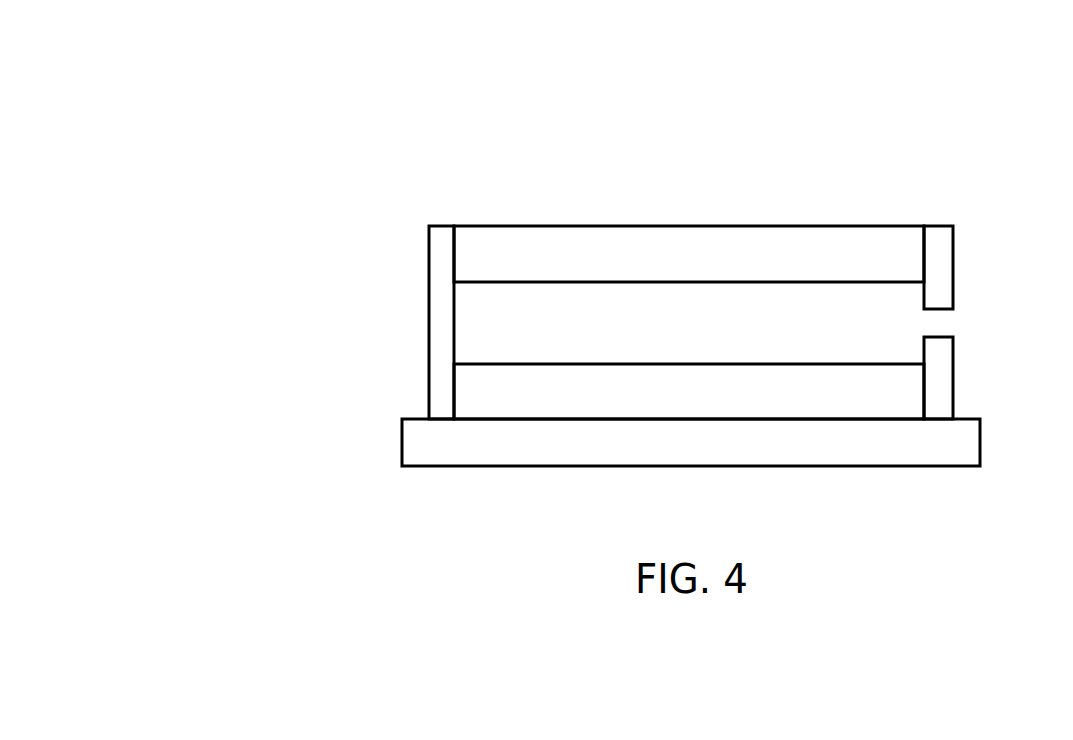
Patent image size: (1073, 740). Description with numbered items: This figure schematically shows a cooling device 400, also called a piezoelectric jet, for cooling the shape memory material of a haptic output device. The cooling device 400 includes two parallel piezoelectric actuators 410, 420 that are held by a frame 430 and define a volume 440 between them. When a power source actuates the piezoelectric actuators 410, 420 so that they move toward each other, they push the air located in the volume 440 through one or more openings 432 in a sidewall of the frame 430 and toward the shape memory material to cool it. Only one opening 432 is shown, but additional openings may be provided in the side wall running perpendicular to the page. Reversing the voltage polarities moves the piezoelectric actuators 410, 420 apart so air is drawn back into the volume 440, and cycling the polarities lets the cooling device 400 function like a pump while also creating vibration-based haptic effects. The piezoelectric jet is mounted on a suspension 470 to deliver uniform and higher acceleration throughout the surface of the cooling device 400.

The cooling device 400 is at (337, 78).
The piezoelectric actuator 410 is at (538, 225).
The piezoelectric actuator 420 is at (469, 418).
The frame 430 is at (428, 314).
The opening 432 is at (949, 323).
The volume 440 is at (543, 337).
The suspension 470 is at (702, 454).